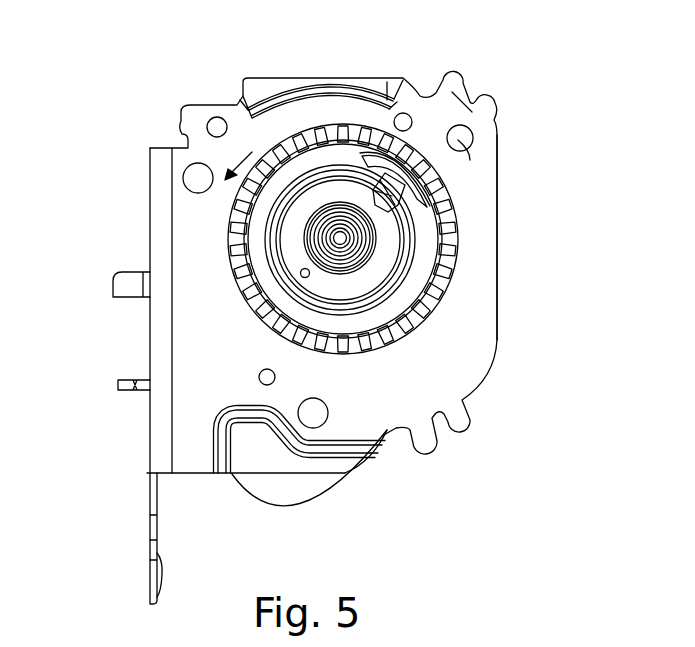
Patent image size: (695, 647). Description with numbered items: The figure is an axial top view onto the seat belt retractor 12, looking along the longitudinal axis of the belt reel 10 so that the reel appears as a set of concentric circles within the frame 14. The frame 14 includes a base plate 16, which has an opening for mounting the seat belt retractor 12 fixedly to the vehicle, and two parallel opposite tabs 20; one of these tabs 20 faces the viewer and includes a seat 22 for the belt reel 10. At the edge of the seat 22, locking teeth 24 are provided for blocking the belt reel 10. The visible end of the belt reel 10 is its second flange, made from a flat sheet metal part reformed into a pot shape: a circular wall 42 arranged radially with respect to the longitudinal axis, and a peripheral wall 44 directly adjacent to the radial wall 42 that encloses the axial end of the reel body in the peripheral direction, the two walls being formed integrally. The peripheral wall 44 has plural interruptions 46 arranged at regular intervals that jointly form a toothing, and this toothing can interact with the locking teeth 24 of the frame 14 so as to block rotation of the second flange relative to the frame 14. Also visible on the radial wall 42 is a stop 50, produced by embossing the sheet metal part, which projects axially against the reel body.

The belt reel 10 is at (592, 124).
The seat belt retractor 12 is at (435, 262).
The frame 14 is at (190, 448).
The base plate 16 is at (155, 542).
The tabs 20 is at (466, 357).
The seat 22 is at (450, 193).
The locking teeth 24 is at (350, 133).
The circular wall 42 is at (272, 296).
The peripheral wall 44 is at (363, 358).
The interruptions 46 is at (440, 313).
The stop 50 is at (420, 180).